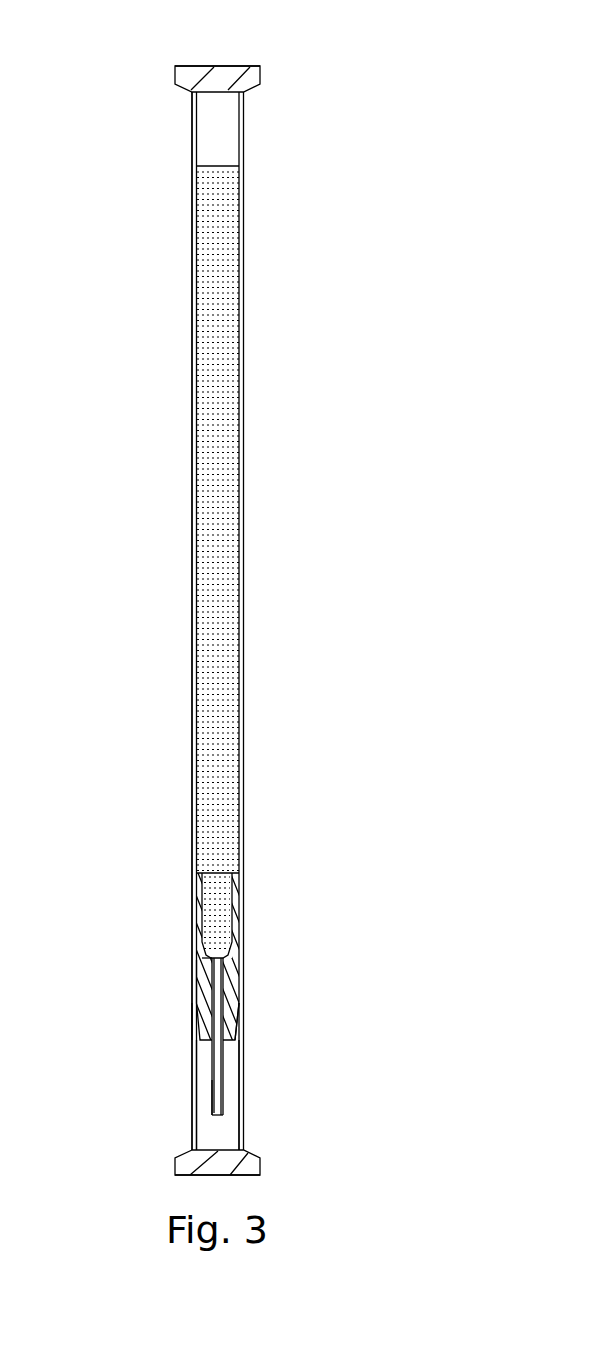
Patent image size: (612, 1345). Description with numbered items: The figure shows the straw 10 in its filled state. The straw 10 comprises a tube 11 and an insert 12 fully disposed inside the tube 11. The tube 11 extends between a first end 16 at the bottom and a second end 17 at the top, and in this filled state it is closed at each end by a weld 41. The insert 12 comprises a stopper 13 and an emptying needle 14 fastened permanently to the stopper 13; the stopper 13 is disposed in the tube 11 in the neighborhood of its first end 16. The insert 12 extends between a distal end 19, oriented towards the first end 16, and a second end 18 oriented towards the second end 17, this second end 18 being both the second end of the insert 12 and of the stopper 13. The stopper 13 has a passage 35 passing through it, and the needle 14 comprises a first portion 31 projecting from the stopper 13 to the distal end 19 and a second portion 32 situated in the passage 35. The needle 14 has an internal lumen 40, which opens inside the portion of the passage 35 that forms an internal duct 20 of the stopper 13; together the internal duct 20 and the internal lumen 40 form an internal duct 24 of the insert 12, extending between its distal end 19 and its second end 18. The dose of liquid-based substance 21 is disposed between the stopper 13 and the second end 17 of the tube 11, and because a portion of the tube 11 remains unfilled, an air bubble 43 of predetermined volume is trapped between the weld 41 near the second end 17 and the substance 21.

The straw 10 is at (364, 60).
The tube 11 is at (194, 412).
The insert 12 is at (190, 1033).
The stopper 13 is at (237, 975).
The emptying needle 14 is at (223, 1082).
The first end of the tube 16 is at (276, 1165).
The second end of the tube 17 is at (142, 67).
The second end of the insert 18 is at (210, 874).
The distal end of the needle 19 is at (215, 1113).
The internal duct of the stopper 20 is at (218, 898).
The dose of liquid-based substance 21 is at (232, 398).
The internal duct of the insert 24 is at (218, 1063).
The first portion of the needle 31 is at (216, 1097).
The second portion of the needle 32 is at (193, 987).
The passage 35 is at (213, 1003).
The internal lumen 40 is at (232, 1018).
The weld 41 is at (225, 78).
The air bubble 43 is at (232, 130).